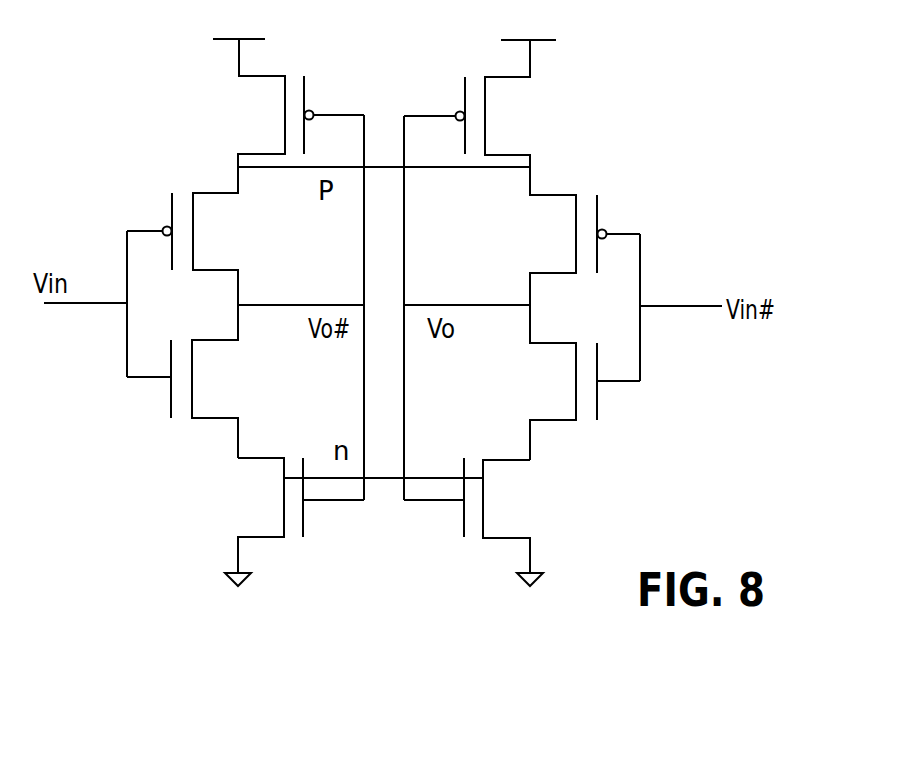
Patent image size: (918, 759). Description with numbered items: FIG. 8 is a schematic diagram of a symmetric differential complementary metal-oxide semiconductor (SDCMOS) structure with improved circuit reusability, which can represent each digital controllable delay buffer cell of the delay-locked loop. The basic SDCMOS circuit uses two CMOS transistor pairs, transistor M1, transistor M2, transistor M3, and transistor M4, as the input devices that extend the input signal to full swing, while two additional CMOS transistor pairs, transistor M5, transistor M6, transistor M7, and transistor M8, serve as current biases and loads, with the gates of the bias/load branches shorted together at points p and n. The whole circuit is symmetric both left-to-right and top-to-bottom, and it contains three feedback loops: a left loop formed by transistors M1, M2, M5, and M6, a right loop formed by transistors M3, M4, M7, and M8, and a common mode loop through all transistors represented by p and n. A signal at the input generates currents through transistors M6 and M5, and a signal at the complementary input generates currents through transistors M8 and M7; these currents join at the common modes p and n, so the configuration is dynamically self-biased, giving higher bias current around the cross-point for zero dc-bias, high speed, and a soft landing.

The transistor M1 is at (182, 381).
The transistor M2 is at (177, 236).
The transistor M3 is at (592, 236).
The transistor M4 is at (591, 382).
The transistor M5 is at (290, 522).
The transistor M6 is at (288, 103).
The transistor M7 is at (473, 522).
The transistor M8 is at (480, 103).